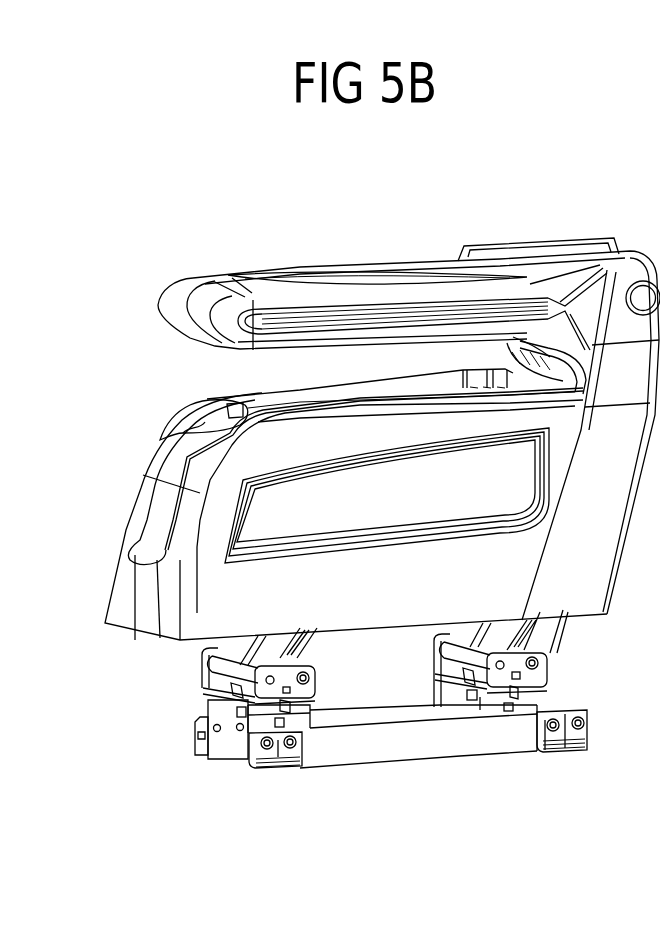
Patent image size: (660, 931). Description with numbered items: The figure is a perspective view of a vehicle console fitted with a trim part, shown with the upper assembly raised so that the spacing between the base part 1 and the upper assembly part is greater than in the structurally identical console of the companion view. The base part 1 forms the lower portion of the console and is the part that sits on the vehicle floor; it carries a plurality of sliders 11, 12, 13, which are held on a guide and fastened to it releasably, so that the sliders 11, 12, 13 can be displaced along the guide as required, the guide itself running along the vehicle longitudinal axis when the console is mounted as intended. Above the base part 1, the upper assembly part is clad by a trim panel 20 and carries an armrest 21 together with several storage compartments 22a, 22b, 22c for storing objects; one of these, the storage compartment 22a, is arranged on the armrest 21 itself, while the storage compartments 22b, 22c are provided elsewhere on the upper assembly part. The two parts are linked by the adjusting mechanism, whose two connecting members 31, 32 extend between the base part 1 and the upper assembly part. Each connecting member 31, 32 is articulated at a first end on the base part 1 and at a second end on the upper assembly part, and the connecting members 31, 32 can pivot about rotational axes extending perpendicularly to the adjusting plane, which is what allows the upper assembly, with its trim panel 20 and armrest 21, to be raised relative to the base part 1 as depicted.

The base part 1 is at (420, 757).
The slider 11 is at (270, 753).
The slider 12 is at (553, 737).
The slider 13 is at (197, 728).
The trim panel 20 is at (133, 483).
The armrest 21 is at (330, 263).
The storage compartment 22a is at (370, 275).
The storage compartment 22b is at (187, 420).
The storage compartment 22c is at (320, 393).
The connecting member 31 is at (553, 647).
The connecting member 32 is at (323, 657).